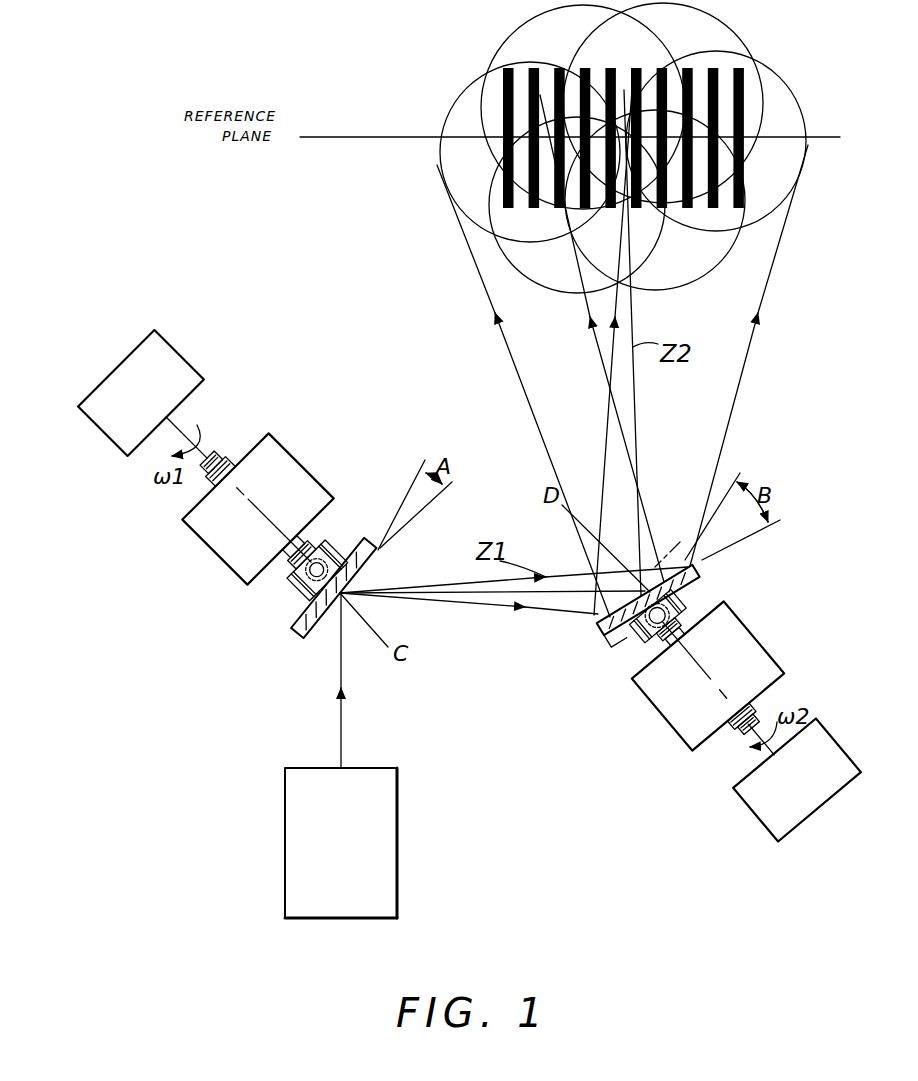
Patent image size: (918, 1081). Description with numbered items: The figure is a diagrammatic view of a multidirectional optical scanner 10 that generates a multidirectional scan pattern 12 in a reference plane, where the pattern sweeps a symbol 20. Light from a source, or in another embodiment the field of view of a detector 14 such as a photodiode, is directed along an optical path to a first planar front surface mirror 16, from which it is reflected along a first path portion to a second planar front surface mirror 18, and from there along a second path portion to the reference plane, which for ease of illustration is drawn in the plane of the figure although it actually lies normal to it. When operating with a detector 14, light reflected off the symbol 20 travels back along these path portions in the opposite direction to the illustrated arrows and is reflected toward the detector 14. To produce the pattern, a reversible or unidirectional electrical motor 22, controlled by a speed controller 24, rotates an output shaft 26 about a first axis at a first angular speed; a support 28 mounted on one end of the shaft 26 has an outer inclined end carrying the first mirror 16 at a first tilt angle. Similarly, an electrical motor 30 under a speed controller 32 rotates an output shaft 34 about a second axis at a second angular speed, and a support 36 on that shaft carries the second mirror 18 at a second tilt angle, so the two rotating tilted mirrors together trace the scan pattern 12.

The multidirectional optical scanner 10 is at (530, 697).
The multidirectional scan pattern 12 is at (787, 62).
The detector 14 is at (285, 793).
The first planar front surface mirror 16 is at (304, 613).
The second planar front surface mirror 18 is at (700, 577).
The symbol 20 is at (540, 210).
The electrical motor 22 is at (287, 472).
The speed controller 24 is at (173, 350).
The output shaft 26 is at (211, 456).
The support 28 is at (333, 534).
The electrical motor 30 is at (750, 647).
The speed controller 32 is at (763, 820).
The output shaft 34 is at (760, 723).
The support 36 is at (648, 622).